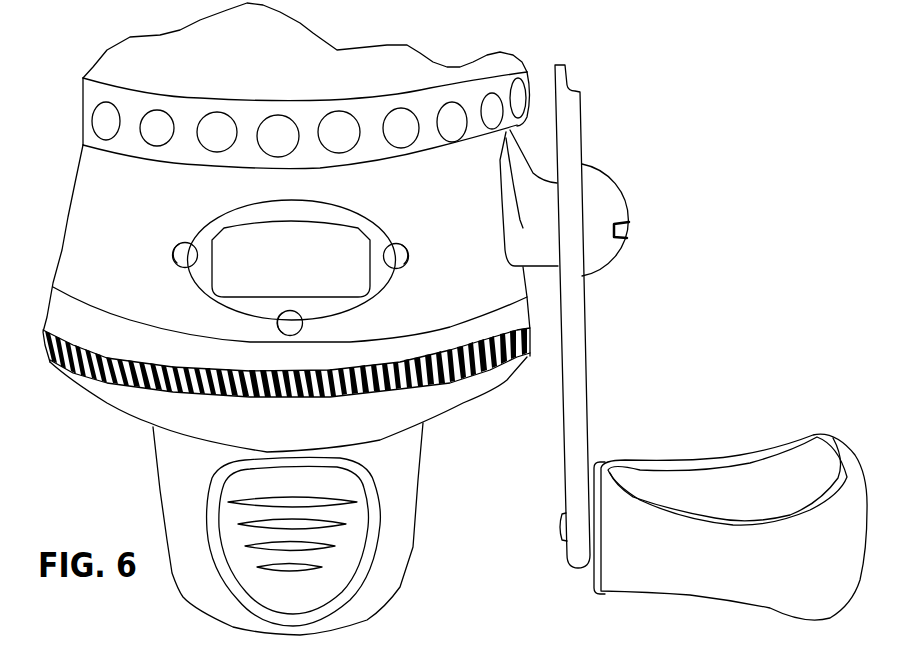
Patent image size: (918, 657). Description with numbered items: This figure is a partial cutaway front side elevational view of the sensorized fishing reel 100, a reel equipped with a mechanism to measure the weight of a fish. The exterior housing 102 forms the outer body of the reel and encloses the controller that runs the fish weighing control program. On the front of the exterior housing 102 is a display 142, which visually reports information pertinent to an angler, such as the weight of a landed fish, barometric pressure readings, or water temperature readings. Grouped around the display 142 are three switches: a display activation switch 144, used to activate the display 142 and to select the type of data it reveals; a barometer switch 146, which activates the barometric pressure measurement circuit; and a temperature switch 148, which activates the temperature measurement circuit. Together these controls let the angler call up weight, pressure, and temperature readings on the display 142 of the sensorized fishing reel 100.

The sensorized fishing reel 100 is at (617, 89).
The exterior housing 102 is at (72, 210).
The display 142 is at (206, 218).
The display activation switch 144 is at (277, 323).
The barometer switch 146 is at (173, 252).
The temperature switch 148 is at (397, 247).